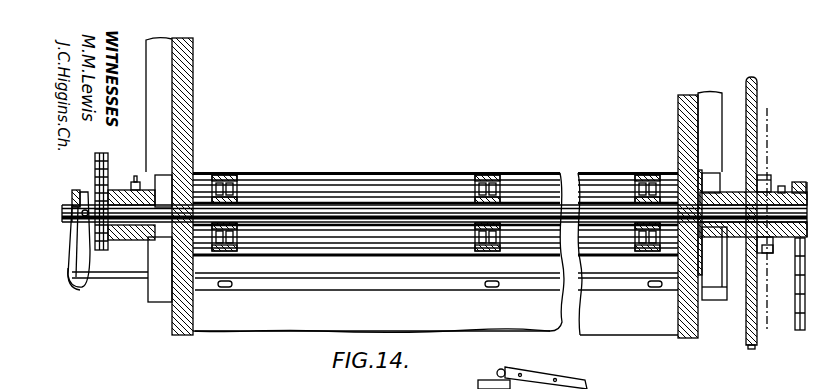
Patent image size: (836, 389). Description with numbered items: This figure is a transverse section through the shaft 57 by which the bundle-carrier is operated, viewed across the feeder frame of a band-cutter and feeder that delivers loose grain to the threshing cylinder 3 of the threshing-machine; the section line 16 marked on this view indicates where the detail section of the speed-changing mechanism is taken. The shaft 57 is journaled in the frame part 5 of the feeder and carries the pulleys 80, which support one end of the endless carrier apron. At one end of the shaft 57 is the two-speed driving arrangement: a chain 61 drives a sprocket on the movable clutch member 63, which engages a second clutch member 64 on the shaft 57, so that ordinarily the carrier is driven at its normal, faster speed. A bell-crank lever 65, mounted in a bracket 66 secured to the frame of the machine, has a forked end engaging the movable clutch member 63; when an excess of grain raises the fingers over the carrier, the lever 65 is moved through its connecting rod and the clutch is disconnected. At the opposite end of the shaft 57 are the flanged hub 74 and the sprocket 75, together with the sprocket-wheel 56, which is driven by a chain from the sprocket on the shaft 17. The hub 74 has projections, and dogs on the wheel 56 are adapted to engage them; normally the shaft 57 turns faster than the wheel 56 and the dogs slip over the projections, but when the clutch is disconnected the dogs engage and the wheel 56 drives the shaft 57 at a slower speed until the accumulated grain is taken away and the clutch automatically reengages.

The cylinder 3 is at (835, 137).
The frame part 5 is at (193, 147).
The plate 16 is at (768, 140).
The shaft 17 is at (776, 153).
The sprocket-wheel 56 is at (752, 349).
The shaft 57 is at (323, 210).
The chain 61 is at (95, 165).
The clutch member 63 is at (90, 278).
The clutch member 64 is at (115, 195).
The bell-crank lever 65 is at (68, 280).
The bracket 66 is at (148, 243).
The flanged hub 74 is at (769, 252).
The sprocket 75 is at (808, 189).
The pulleys 80 is at (233, 173).